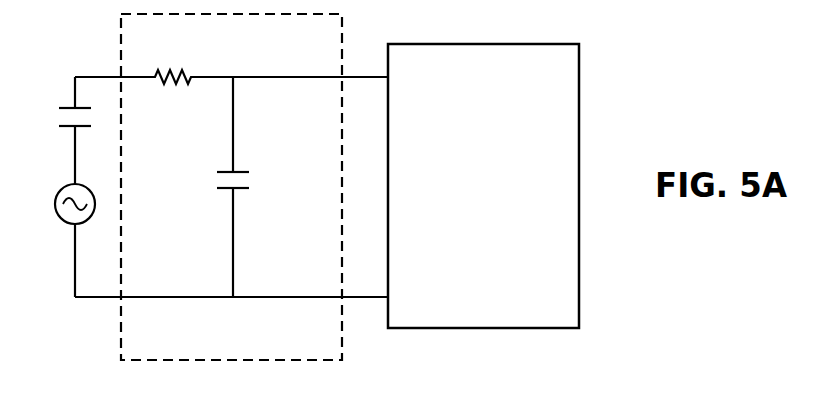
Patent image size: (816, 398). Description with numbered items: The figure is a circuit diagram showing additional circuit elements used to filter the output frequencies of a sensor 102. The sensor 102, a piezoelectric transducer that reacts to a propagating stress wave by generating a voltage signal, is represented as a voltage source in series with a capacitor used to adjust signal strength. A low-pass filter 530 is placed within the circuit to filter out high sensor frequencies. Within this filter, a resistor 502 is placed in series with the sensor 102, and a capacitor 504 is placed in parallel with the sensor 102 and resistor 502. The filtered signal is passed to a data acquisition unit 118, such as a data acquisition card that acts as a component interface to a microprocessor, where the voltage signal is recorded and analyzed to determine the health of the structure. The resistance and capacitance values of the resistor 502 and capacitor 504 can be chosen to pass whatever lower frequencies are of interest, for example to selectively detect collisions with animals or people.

The sensor 102 is at (52, 187).
The data acquisition unit 118 is at (504, 313).
The resistor 502 is at (155, 87).
The capacitor 504 is at (250, 180).
The low-pass filter 530 is at (231, 188).